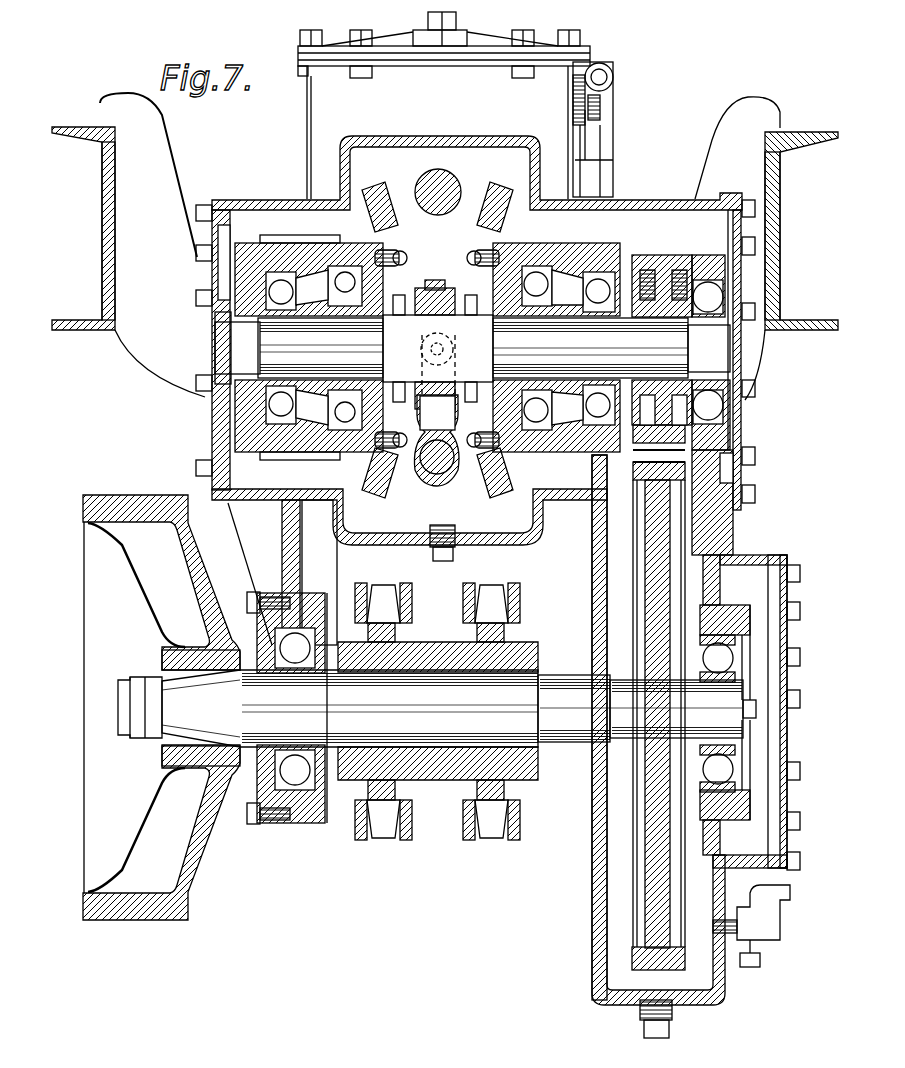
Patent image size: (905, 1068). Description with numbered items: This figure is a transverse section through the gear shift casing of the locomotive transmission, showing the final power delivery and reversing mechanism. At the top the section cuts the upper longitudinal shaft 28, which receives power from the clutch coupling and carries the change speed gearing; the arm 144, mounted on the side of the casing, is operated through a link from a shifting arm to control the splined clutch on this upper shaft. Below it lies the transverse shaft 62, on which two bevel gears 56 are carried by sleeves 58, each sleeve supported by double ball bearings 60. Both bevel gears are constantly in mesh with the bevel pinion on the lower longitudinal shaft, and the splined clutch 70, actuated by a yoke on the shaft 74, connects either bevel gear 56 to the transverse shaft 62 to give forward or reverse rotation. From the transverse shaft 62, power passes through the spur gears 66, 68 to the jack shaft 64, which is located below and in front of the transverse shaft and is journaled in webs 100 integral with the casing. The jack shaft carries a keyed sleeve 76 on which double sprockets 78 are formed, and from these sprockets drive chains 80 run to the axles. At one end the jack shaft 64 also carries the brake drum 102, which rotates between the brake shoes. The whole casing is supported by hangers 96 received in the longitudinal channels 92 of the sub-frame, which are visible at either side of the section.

The upper longitudinal shaft 28 is at (440, 180).
The bevel gears 56 is at (488, 240).
The sleeves 58 is at (383, 290).
The double ball bearings 60 is at (342, 278).
The transverse shaft 62 is at (472, 366).
The jack shaft 64 is at (570, 745).
The spur gear 66 is at (675, 442).
The spur gear 68 is at (675, 473).
The splined clutch 70 is at (430, 400).
The shaft 74 is at (437, 476).
The keyed sleeve 76 is at (447, 778).
The double sprockets 78 is at (477, 630).
The drive chains 80 is at (472, 590).
The longitudinal channels 92 is at (101, 265).
The hangers 96 is at (163, 188).
The webs 100 is at (285, 548).
The brake drum 102 is at (190, 872).
The arm 144 is at (603, 152).